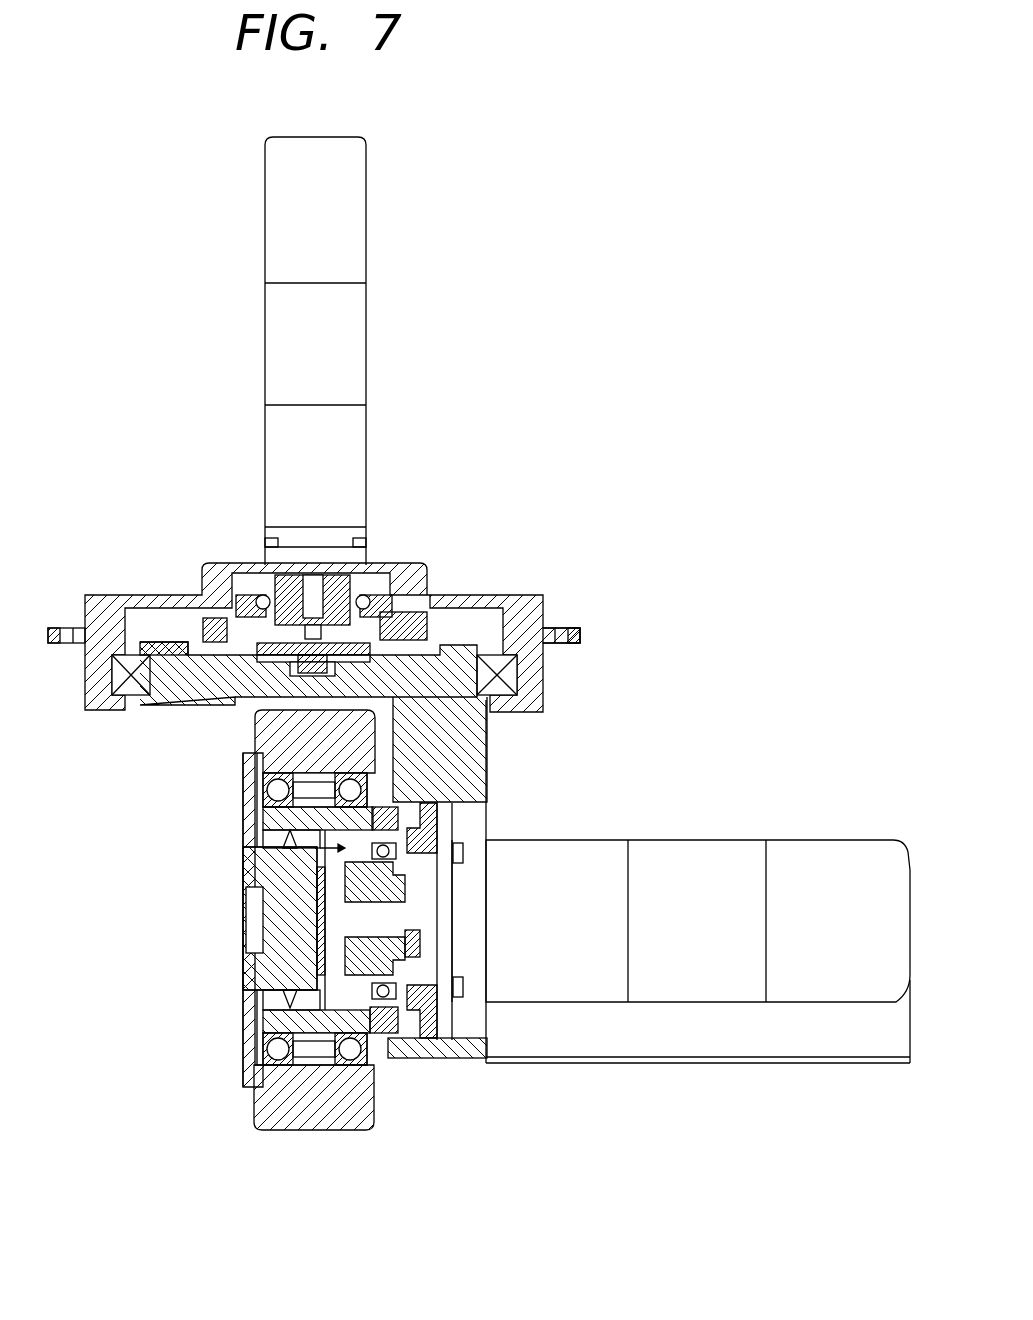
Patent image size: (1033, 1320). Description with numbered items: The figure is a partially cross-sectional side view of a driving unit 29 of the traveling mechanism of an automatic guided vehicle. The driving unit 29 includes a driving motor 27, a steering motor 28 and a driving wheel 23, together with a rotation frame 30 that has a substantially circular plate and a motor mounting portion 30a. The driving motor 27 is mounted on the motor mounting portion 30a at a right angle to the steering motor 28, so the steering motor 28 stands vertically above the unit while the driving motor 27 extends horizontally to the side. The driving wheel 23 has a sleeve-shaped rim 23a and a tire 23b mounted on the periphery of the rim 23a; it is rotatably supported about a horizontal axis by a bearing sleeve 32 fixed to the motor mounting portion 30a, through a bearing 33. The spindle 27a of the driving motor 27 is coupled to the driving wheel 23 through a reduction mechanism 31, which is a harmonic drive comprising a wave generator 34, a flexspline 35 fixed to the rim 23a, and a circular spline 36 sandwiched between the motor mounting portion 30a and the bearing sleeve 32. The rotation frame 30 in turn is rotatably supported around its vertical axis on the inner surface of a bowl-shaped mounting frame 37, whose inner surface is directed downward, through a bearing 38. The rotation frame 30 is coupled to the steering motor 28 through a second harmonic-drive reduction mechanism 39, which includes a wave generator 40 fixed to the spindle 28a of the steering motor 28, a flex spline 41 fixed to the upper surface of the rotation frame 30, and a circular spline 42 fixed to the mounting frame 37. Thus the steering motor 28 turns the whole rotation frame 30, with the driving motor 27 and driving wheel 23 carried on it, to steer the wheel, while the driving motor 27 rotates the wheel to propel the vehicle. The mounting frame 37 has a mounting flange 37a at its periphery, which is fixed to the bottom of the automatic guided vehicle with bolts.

The driving wheel 23 is at (233, 979).
The rim 23a is at (245, 1012).
The tire 23b is at (316, 1130).
The driving motor 27 is at (740, 840).
The spindle 27a is at (418, 913).
The steering motor 28 is at (366, 345).
The spindle 28a is at (318, 587).
The driving unit 29 is at (590, 450).
The rotation frame 30 is at (150, 705).
The motor mounting portion 30a is at (482, 749).
The reduction mechanism 31 is at (275, 846).
The bearing sleeve 32 is at (263, 800).
The bearing 33 is at (256, 1096).
The wave generator 34 is at (406, 965).
The flexspline 35 is at (362, 1040).
The circular spline 36 is at (480, 821).
The mounting frame 37 is at (506, 597).
The mounting flange 37a is at (559, 630).
The bearing 38 is at (111, 713).
The reduction mechanism 39 is at (251, 586).
The wave generator 40 is at (349, 590).
The flex spline 41 is at (225, 614).
The circular spline 42 is at (393, 598).